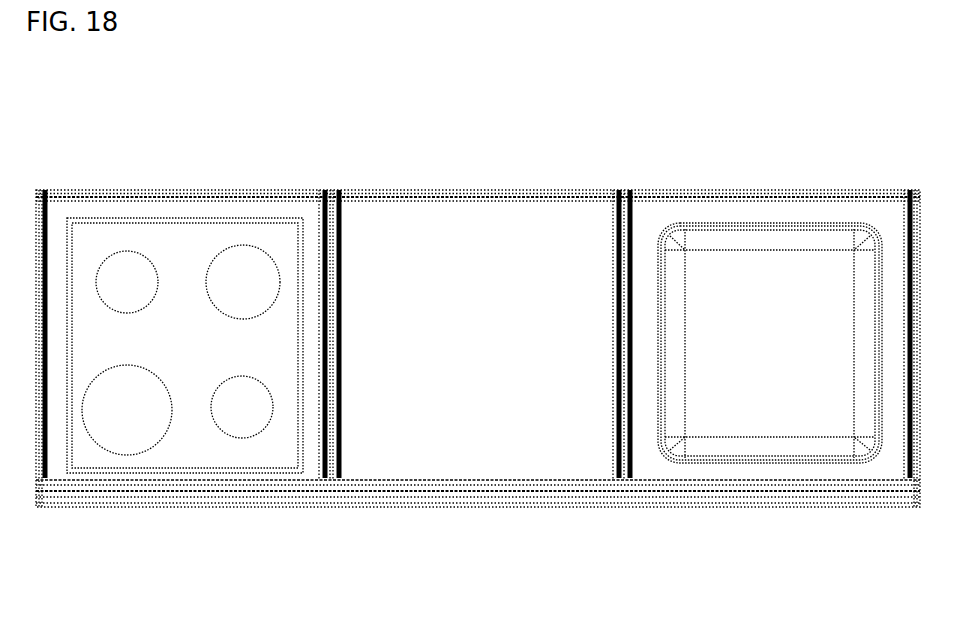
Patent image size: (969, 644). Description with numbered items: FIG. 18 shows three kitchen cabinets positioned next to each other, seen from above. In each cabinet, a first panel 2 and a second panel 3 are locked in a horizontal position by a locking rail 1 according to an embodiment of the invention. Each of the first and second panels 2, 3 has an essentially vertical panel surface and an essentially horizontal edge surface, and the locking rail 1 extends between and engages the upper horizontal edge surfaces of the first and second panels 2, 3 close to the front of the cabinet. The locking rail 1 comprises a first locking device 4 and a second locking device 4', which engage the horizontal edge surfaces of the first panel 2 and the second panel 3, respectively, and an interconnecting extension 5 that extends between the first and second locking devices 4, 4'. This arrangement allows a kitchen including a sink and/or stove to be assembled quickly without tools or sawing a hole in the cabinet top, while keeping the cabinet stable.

The locking rail 1 is at (200, 507).
The first panel 2 is at (44, 236).
The second panel 3 is at (325, 222).
The first locking device 4 is at (478, 404).
The second locking device 4' is at (478, 400).
The interconnecting extension 5 is at (153, 482).